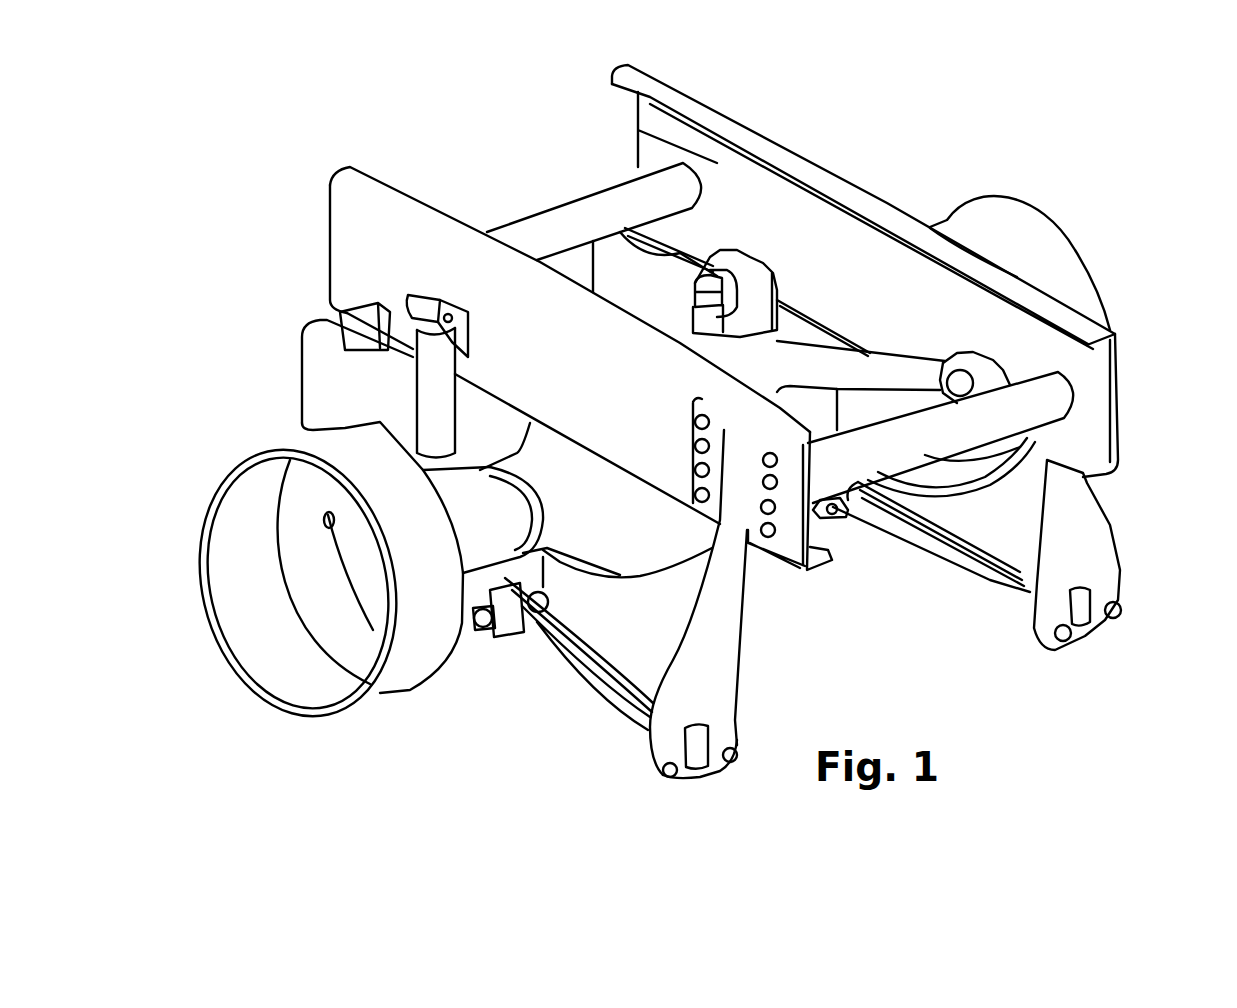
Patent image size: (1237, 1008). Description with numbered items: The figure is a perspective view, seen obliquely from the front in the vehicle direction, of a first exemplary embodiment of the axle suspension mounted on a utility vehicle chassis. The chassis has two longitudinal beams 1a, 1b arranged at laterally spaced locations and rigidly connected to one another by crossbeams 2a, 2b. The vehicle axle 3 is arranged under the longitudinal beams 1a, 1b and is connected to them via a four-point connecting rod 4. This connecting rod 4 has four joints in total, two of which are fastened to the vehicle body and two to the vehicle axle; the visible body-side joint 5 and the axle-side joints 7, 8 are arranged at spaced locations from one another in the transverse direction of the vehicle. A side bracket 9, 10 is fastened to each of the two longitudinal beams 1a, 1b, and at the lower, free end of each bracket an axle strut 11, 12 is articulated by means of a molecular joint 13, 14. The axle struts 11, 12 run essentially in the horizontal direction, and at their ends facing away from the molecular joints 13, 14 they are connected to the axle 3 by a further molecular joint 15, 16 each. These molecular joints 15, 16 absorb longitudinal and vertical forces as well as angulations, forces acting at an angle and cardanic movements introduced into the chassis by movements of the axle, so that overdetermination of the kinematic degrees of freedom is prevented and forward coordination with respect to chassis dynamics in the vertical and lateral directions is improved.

The longitudinal beam 1a is at (717, 163).
The longitudinal beam 1b is at (437, 270).
The crossbeam 2a is at (561, 221).
The crossbeam 2b is at (1017, 402).
The vehicle axle 3 is at (563, 493).
The four-point connecting rod 4 is at (766, 355).
The joint 5 is at (967, 368).
The joint 7 is at (751, 258).
The joint 8 is at (467, 221).
The side bracket 9 is at (720, 638).
The side bracket 10 is at (1082, 547).
The axle strut 11 is at (588, 679).
The axle strut 12 is at (990, 578).
The molecular joint 13 is at (660, 780).
The molecular joint 14 is at (1082, 614).
The molecular joint 15 is at (472, 612).
The molecular joint 16 is at (838, 510).